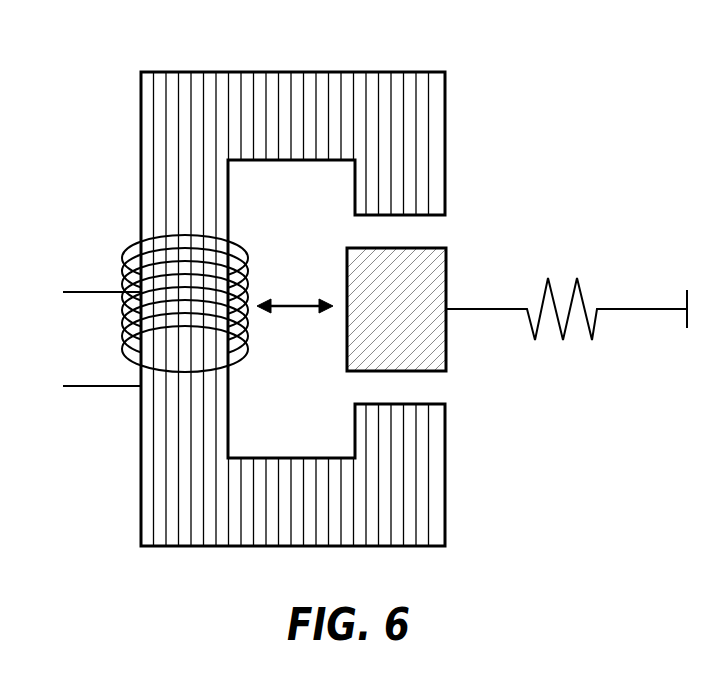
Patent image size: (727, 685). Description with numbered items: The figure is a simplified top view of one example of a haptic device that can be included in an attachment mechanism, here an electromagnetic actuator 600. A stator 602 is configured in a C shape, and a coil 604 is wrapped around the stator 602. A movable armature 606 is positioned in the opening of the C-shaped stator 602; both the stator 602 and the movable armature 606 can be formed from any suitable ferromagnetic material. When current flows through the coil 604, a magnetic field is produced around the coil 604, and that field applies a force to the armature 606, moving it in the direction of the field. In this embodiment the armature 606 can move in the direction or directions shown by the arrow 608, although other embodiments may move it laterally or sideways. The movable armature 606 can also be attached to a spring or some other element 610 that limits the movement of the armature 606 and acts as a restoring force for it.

The electromagnetic actuator 600 is at (461, 47).
The stator 602 is at (141, 148).
The coil 604 is at (72, 324).
The movable armature 606 is at (447, 349).
The arrow 608 is at (293, 311).
The spring or other element 610 is at (592, 333).